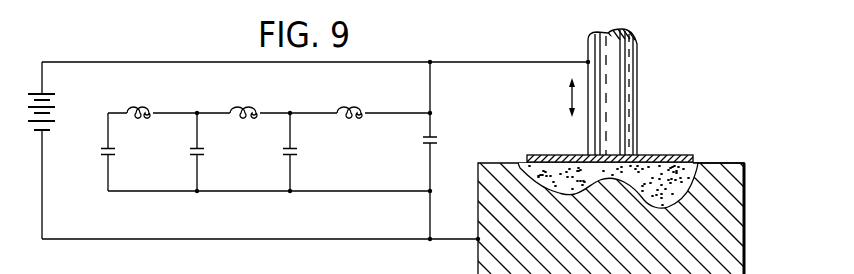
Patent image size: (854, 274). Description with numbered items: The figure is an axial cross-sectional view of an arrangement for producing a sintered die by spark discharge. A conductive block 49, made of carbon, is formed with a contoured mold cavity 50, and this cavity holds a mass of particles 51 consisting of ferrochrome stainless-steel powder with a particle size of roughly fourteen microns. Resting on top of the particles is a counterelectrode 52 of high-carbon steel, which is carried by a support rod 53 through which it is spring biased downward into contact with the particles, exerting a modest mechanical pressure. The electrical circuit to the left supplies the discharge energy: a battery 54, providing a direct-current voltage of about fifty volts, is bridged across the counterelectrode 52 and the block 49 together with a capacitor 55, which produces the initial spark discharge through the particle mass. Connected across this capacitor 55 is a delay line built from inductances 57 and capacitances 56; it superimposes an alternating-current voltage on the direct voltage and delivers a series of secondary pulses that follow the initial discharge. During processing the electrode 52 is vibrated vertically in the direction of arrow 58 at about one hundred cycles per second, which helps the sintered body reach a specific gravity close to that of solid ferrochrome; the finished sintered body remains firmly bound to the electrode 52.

The conductive block 49 is at (735, 257).
The contoured mold cavity 50 is at (694, 164).
The mass of particles 51 is at (652, 170).
The counterelectrode 52 is at (567, 154).
The support rod 53 is at (632, 92).
The battery 54 is at (55, 106).
The capacitor 55 is at (438, 140).
The capacitances 56 is at (304, 152).
The inductances 57 is at (357, 101).
The arrow 58 is at (566, 93).